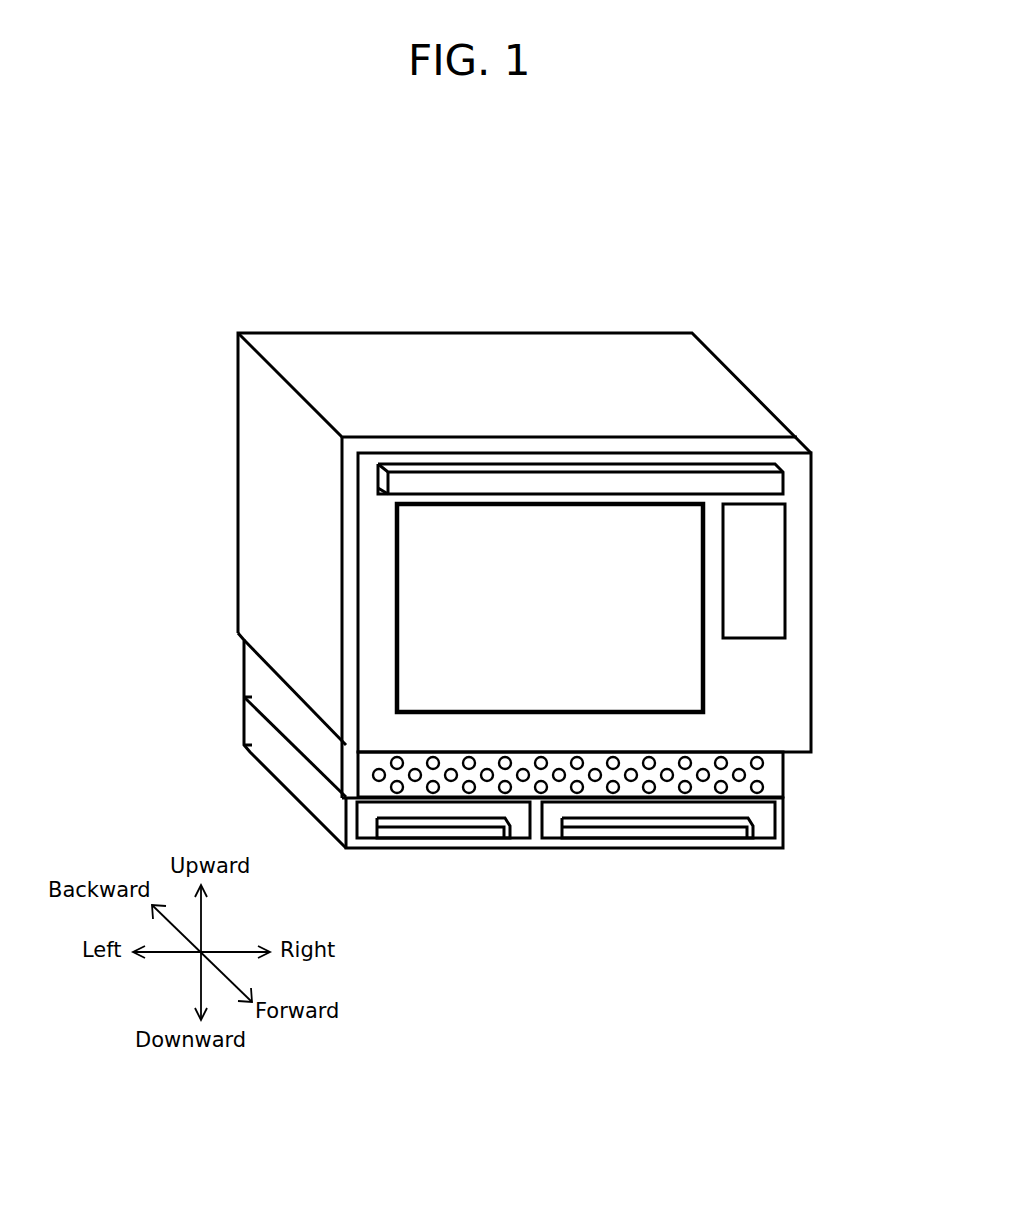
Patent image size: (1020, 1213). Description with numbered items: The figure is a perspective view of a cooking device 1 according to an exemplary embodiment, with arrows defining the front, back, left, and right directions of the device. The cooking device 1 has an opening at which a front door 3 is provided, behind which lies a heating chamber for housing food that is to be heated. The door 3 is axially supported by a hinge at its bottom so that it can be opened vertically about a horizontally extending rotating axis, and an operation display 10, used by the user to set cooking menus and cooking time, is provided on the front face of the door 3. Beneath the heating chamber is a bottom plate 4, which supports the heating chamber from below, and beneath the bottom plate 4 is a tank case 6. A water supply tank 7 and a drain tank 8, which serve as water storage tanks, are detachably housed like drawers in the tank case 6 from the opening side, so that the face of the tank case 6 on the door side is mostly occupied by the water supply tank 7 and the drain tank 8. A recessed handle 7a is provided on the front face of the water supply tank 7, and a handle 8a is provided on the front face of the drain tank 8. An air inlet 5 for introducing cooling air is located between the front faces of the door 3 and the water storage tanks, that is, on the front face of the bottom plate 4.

The cooking device 1 is at (382, 309).
The door 3 is at (792, 693).
The bottom plate 4 is at (250, 672).
The air inlet 5 is at (762, 766).
The tank case 6 is at (250, 740).
The water supply tank 7 is at (766, 826).
The recessed handle 7a is at (662, 826).
The drain tank 8 is at (368, 848).
The handle 8a is at (455, 826).
The operation display 10 is at (760, 595).